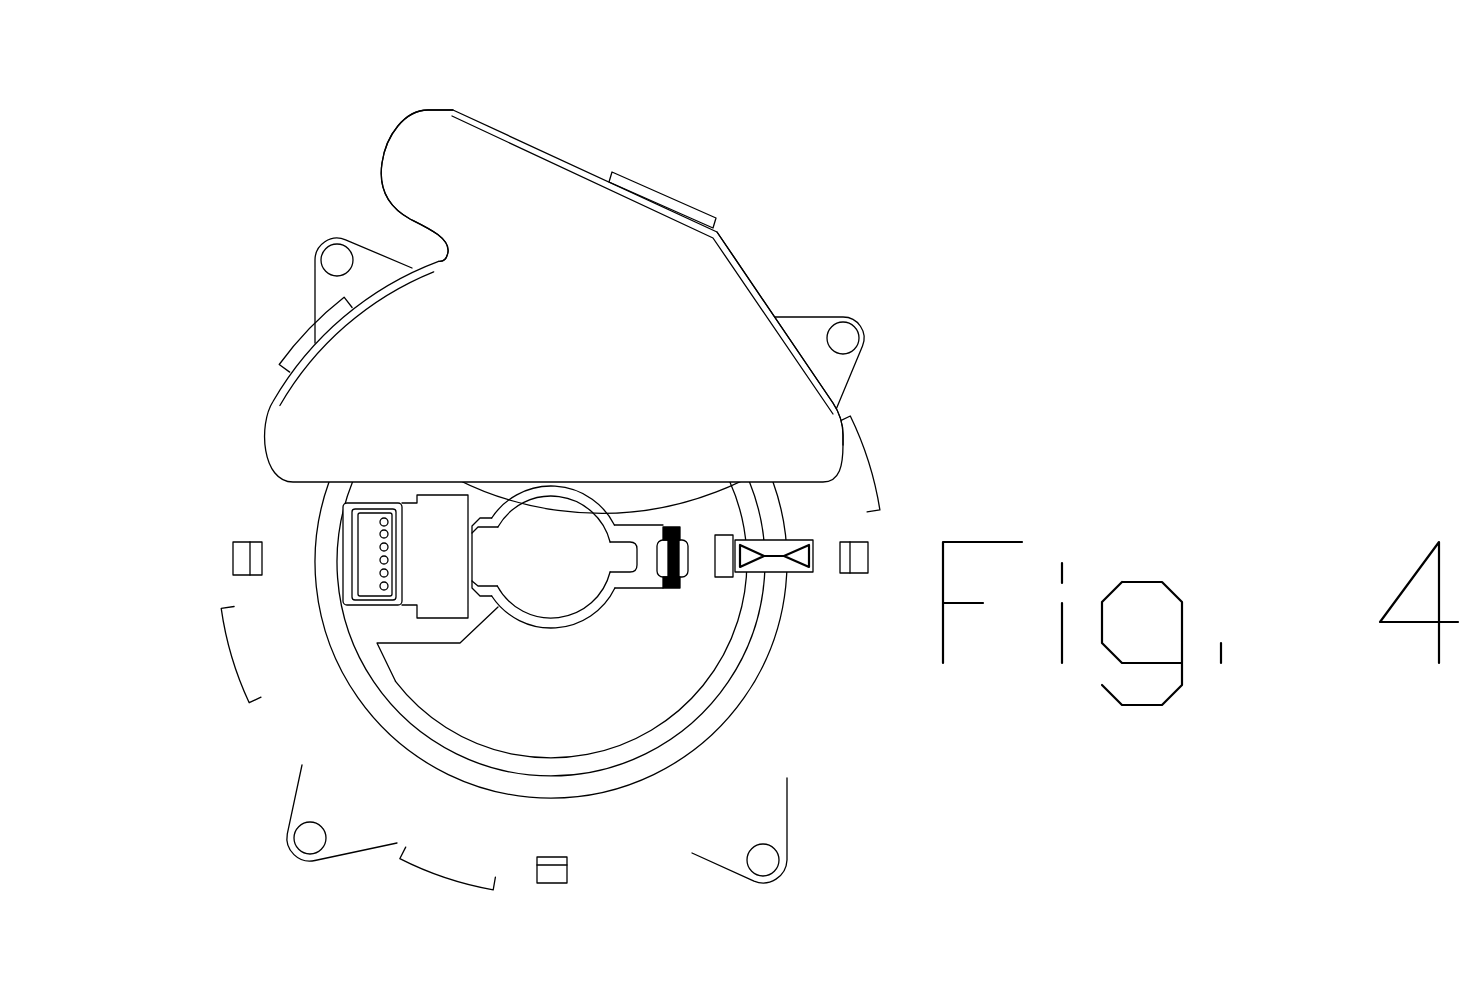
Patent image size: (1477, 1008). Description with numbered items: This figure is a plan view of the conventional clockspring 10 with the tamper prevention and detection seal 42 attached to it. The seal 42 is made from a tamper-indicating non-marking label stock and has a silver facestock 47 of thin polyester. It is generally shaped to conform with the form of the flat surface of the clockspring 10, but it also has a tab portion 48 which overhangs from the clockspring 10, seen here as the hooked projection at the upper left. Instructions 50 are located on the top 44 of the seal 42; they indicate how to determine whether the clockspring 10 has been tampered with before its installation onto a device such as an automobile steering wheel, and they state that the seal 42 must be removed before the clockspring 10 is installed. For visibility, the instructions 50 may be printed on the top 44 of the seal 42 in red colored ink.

The clockspring 10 is at (228, 276).
The tamper prevention and detection seal 42 is at (614, 255).
The top of the seal 44 is at (577, 205).
The silver facestock 47 is at (745, 318).
The tab portion 48 is at (462, 140).
The instructions 50 is at (243, 400).